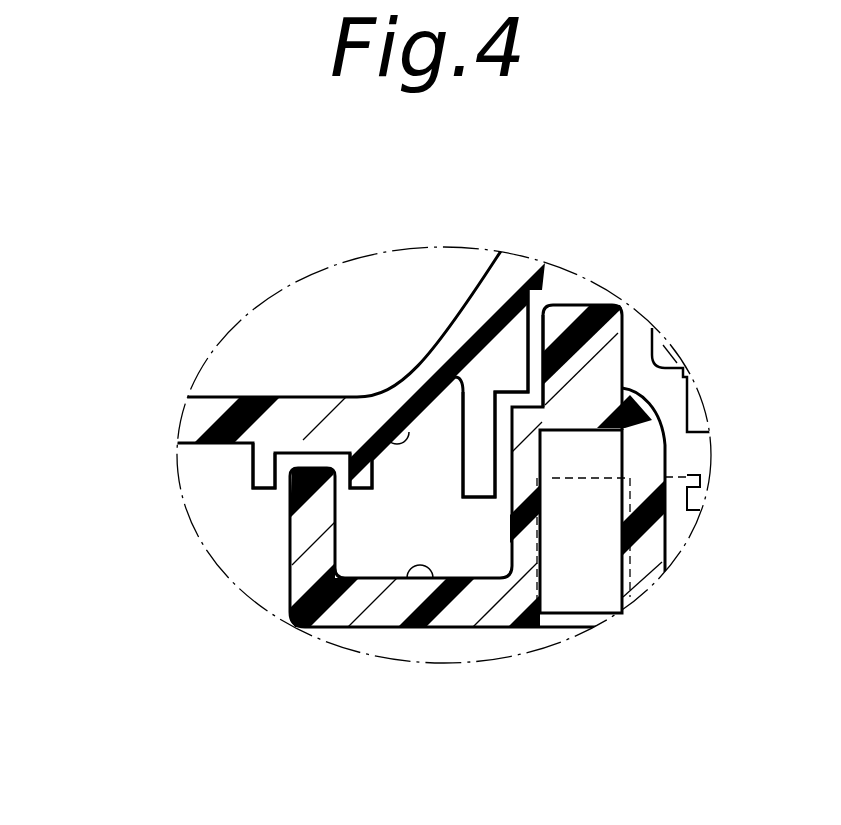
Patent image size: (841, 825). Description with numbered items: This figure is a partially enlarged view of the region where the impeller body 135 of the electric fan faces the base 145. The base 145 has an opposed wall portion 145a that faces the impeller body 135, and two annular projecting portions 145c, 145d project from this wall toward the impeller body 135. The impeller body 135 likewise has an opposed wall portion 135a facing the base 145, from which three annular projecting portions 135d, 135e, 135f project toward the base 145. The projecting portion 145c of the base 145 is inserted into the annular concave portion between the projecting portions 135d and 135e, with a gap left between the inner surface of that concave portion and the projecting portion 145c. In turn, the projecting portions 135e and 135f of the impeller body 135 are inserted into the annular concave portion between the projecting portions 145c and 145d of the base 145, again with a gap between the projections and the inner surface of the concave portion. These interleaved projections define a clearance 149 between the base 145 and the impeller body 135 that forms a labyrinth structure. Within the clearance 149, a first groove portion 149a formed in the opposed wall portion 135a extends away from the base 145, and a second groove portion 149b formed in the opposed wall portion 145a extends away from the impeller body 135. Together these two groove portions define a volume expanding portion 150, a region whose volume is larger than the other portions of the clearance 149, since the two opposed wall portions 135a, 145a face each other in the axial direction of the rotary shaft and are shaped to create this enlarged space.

The impeller body 135 is at (406, 344).
The opposed wall portion 135a is at (455, 350).
The projecting portion 135d is at (252, 473).
The projecting portion 135e is at (335, 440).
The projecting portion 135f is at (502, 437).
The base 145 is at (434, 527).
The opposed wall portion 145a is at (353, 614).
The projecting portion 145c is at (358, 549).
The projecting portion 145d is at (523, 547).
The clearance 149 is at (319, 493).
The first groove portion 149a is at (385, 432).
The second groove portion 149b is at (405, 582).
The volume expanding portion 150 is at (392, 505).